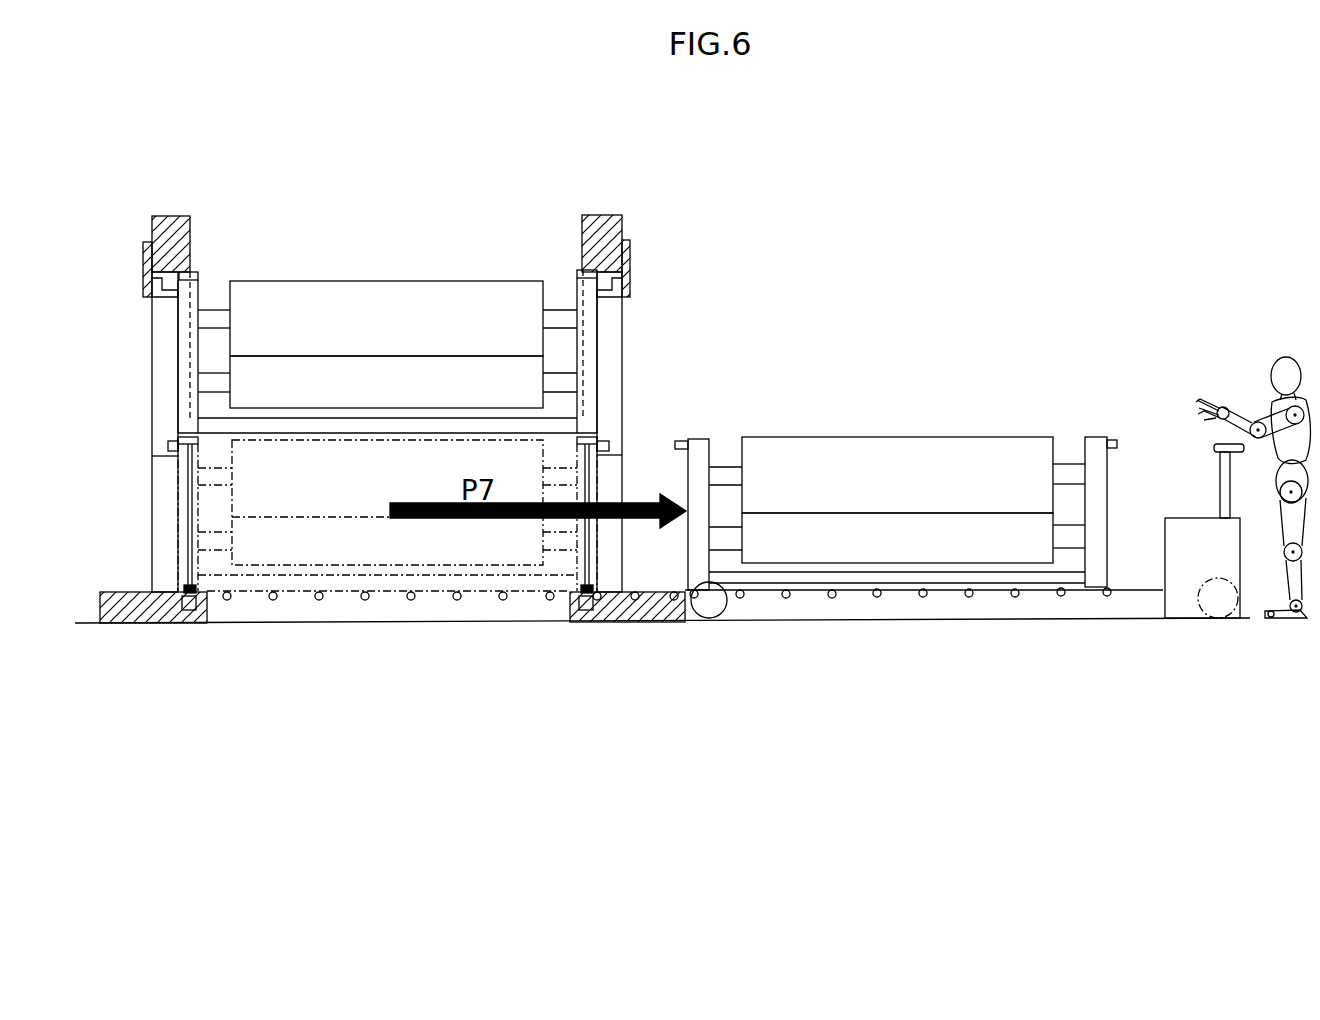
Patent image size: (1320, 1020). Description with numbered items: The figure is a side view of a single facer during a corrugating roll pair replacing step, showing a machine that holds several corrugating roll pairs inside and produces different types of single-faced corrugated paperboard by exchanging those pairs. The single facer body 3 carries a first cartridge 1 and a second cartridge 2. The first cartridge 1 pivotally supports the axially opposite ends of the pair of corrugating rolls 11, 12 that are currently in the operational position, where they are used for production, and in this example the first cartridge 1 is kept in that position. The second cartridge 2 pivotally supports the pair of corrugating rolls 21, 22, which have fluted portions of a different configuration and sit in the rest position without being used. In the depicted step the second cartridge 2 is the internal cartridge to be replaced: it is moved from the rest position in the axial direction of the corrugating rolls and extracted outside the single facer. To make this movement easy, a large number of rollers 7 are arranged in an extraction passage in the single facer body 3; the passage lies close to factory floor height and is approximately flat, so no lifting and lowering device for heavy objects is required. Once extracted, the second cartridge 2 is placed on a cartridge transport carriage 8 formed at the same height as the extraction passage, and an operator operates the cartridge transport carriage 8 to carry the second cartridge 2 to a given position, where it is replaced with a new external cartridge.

The first cartridge 1 is at (600, 347).
The second cartridge 2 is at (1099, 434).
The single facer body 3 is at (620, 211).
The rollers 7 is at (320, 600).
The cartridge transport carriage 8 is at (1193, 512).
The corrugating roll 11 is at (420, 316).
The corrugating roll 12 is at (342, 387).
The corrugating roll 21 is at (928, 466).
The corrugating roll 22 is at (845, 540).